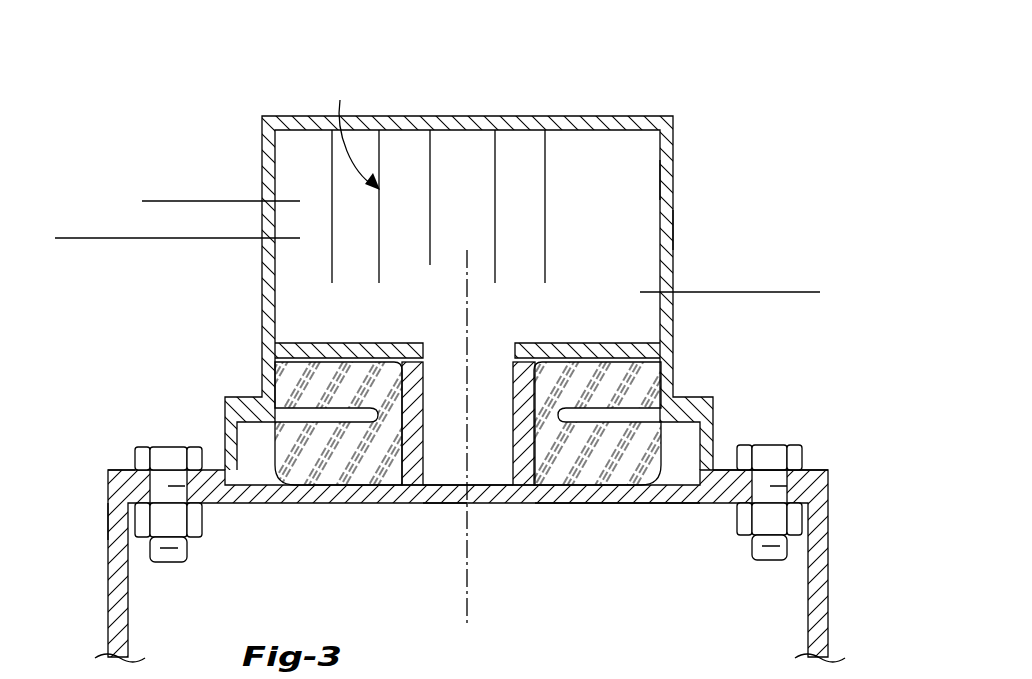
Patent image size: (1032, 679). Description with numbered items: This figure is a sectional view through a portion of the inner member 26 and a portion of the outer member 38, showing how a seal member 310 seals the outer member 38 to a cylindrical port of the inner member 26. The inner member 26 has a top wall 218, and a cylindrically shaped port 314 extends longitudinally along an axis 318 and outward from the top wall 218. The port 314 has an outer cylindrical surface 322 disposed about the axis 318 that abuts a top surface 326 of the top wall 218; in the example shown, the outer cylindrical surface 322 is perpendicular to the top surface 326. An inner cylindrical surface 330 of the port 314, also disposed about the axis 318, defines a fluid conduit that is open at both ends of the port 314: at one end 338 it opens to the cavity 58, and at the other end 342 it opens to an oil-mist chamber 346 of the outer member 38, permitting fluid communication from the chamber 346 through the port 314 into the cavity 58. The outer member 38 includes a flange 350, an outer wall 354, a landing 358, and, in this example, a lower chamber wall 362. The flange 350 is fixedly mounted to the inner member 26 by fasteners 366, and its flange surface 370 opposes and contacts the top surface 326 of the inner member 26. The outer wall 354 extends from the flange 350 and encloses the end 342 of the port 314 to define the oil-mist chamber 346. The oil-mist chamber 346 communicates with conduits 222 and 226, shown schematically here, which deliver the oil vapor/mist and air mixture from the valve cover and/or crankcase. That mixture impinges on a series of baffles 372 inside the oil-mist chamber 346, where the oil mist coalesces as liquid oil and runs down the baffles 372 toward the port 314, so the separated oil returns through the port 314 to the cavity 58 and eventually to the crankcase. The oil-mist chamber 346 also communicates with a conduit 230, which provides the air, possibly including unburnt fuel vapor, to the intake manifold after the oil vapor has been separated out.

The inner member 26 is at (108, 602).
The outer member 38 is at (262, 146).
The cavity 58 is at (808, 607).
The top wall 218 is at (295, 503).
The conduit 222 is at (157, 201).
The conduit 226 is at (82, 238).
The conduit 230 is at (782, 292).
The seal member 310 is at (315, 380).
The port 314 is at (520, 405).
The axis 318 is at (467, 608).
The outer cylindrical surface 322 is at (556, 503).
The top surface 326 is at (128, 478).
The inner cylindrical surface 330 is at (503, 503).
The end 338 is at (441, 503).
The end 342 is at (445, 358).
The oil-mist chamber 346 is at (630, 166).
The flange 350 is at (828, 470).
The outer wall 354 is at (665, 220).
The landing 358 is at (650, 503).
The lower chamber wall 362 is at (610, 352).
The fasteners 366 is at (165, 447).
The flange surface 370 is at (122, 497).
The baffles 372 is at (352, 130).